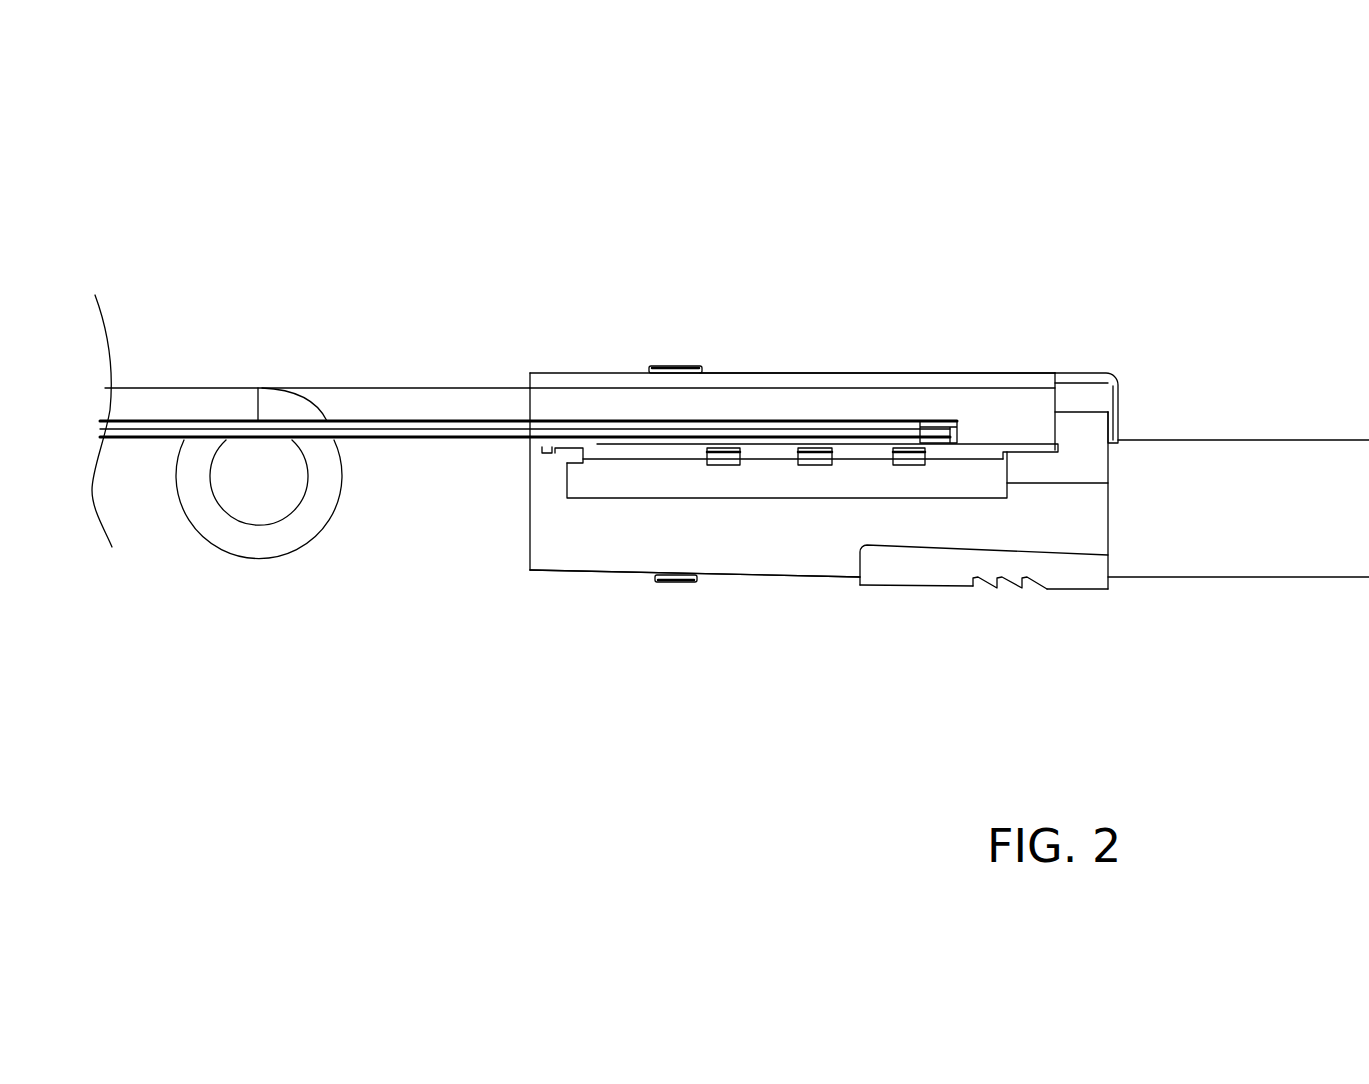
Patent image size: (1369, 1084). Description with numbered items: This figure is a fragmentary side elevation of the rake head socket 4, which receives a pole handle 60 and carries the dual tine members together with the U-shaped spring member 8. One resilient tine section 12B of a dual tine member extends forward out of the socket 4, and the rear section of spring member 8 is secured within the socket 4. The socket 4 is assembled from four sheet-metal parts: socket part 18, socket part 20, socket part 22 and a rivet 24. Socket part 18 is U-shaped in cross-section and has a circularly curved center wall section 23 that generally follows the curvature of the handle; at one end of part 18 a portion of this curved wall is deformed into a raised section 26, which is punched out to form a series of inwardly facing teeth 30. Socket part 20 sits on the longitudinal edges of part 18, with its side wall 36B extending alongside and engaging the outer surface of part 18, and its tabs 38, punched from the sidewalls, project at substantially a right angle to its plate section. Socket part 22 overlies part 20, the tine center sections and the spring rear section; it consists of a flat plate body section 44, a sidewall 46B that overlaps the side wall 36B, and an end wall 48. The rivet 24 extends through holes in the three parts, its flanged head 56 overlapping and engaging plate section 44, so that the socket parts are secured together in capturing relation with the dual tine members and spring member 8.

The socket 4 is at (878, 343).
The U-shaped spring member 8 is at (240, 362).
The resilient tine section 12B is at (458, 442).
The socket part 18 is at (505, 548).
The socket part 20 is at (1035, 473).
The socket part 22 is at (980, 362).
The circularly curved center wall section 23 is at (777, 577).
The rivet 24 is at (655, 583).
The raised section 26 is at (873, 580).
The inwardly facing teeth 30 is at (993, 587).
The side wall 36B is at (608, 483).
The tabs 38 is at (798, 448).
The flat plate body section 44 is at (565, 375).
The sidewall 46B is at (585, 407).
The end wall 48 is at (1120, 397).
The flanged head 56 is at (686, 366).
The pole handle 60 is at (1243, 425).